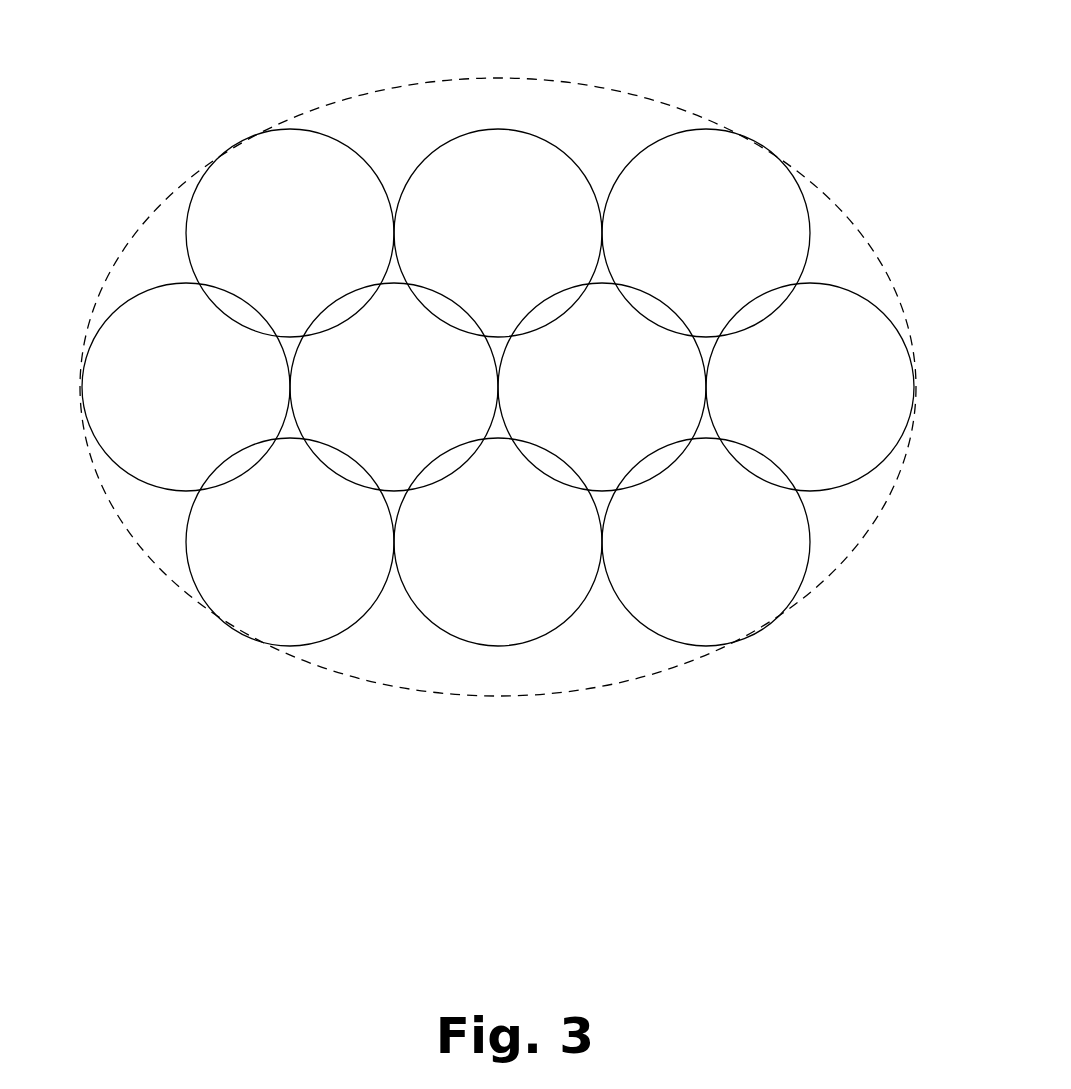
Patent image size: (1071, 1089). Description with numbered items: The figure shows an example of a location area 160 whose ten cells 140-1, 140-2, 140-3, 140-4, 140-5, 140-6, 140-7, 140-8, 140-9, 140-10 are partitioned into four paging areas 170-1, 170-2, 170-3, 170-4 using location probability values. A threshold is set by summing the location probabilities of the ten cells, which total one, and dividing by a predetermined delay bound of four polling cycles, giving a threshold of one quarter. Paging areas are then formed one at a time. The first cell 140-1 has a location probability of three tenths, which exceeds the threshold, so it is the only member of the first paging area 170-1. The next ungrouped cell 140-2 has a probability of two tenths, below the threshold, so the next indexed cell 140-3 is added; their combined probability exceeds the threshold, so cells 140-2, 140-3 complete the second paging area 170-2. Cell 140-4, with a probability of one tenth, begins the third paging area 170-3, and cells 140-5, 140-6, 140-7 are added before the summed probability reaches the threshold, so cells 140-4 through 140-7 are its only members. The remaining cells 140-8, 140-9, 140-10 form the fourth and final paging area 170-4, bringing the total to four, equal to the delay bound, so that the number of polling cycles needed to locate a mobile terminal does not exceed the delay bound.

The location area 160 is at (625, 94).
The cell 140-1 is at (290, 233).
The cell 140-2 is at (498, 233).
The cell 140-3 is at (394, 387).
The cell 140-4 is at (186, 387).
The cell 140-5 is at (290, 542).
The cell 140-6 is at (498, 542).
The cell 140-7 is at (602, 387).
The cell 140-8 is at (706, 233).
The cell 140-9 is at (810, 387).
The cell 140-10 is at (706, 542).
The first paging area 170-1 is at (272, 163).
The second paging area 170-2 is at (393, 317).
The third paging area 170-3 is at (601, 440).
The fourth paging area 170-4 is at (707, 288).